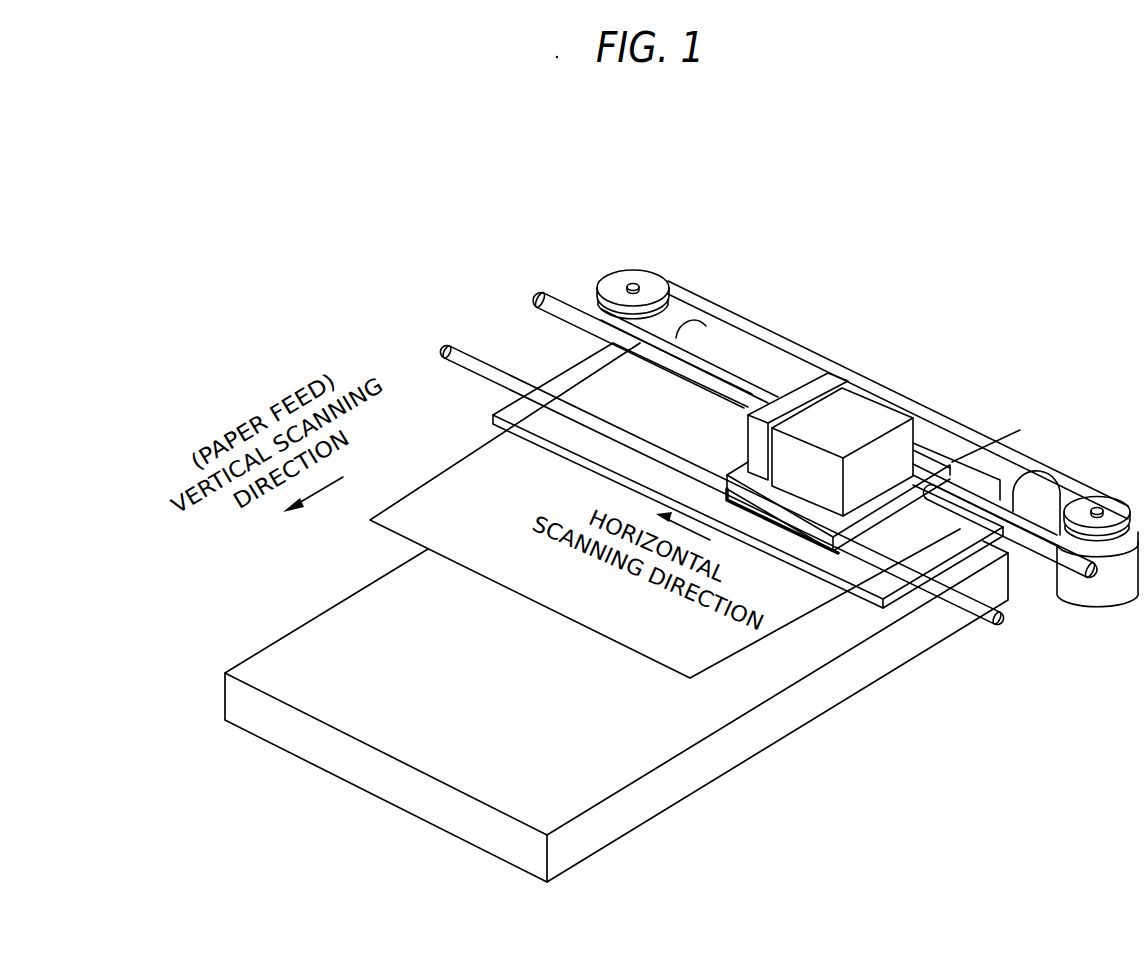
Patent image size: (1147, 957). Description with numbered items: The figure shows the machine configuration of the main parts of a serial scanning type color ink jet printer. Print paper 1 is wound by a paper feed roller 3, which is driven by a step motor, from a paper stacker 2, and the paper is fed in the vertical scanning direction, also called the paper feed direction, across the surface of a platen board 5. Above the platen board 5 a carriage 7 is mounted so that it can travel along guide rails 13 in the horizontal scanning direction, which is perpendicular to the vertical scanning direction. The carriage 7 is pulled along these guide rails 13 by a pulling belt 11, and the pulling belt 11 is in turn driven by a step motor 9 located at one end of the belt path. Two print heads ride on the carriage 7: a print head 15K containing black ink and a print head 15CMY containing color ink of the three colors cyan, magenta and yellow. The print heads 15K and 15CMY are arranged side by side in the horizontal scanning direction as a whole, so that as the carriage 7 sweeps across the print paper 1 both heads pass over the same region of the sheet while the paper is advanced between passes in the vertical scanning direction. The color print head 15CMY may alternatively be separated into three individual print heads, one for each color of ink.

The print paper 1 is at (458, 493).
The paper stacker 2 is at (720, 745).
The paper feed roller 3 is at (1025, 480).
The platen board 5 is at (892, 585).
The carriage 7 is at (772, 513).
The step motor 9 is at (1092, 588).
The pulling belt 11 is at (747, 322).
The guide rails 13 is at (478, 350).
The print head 15K is at (813, 385).
The print head 15CMY is at (863, 417).